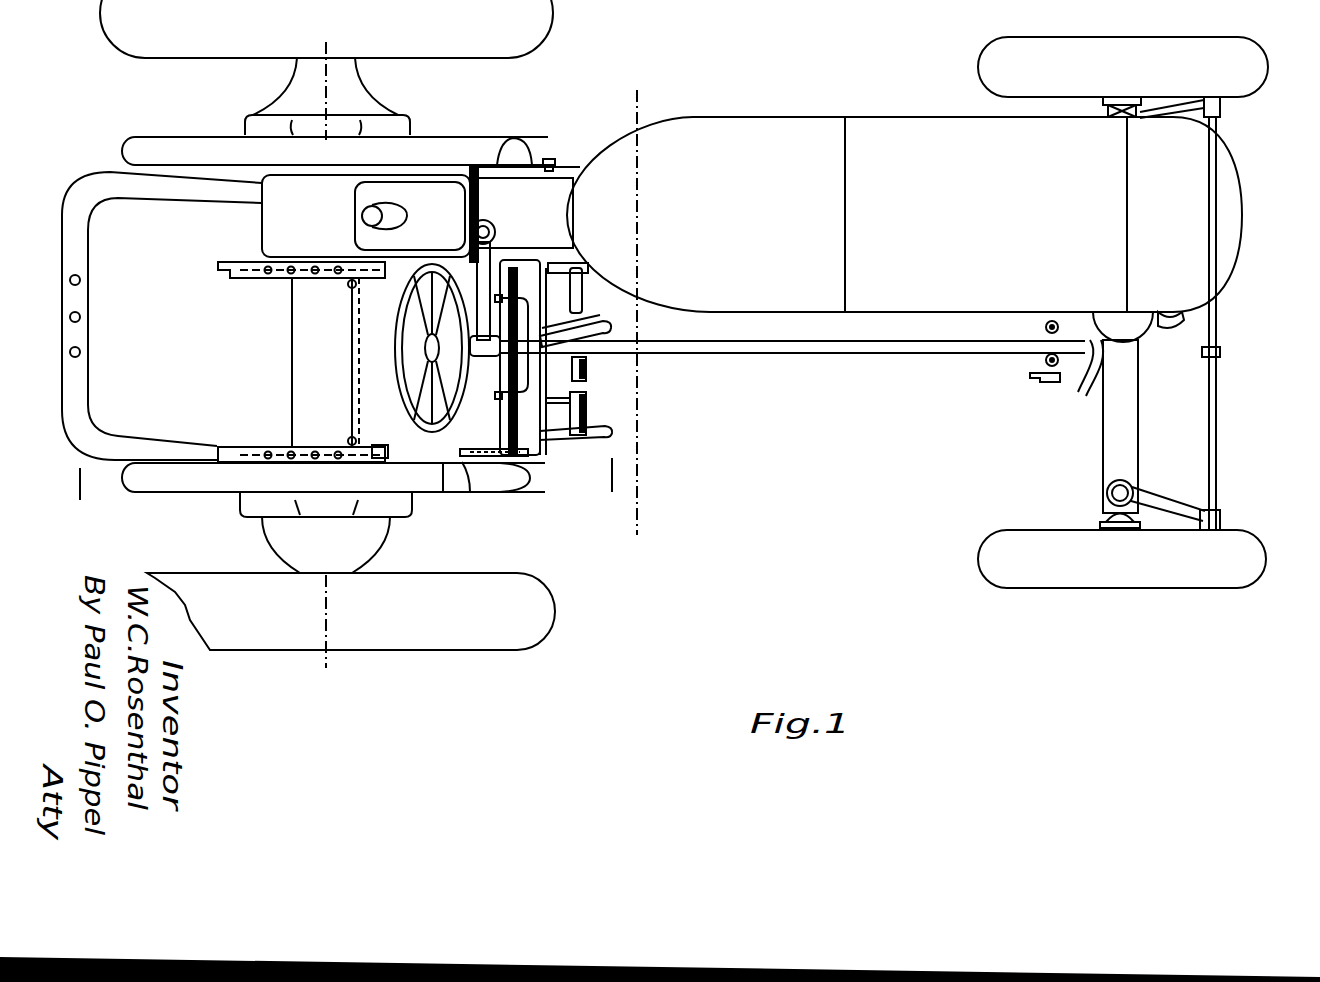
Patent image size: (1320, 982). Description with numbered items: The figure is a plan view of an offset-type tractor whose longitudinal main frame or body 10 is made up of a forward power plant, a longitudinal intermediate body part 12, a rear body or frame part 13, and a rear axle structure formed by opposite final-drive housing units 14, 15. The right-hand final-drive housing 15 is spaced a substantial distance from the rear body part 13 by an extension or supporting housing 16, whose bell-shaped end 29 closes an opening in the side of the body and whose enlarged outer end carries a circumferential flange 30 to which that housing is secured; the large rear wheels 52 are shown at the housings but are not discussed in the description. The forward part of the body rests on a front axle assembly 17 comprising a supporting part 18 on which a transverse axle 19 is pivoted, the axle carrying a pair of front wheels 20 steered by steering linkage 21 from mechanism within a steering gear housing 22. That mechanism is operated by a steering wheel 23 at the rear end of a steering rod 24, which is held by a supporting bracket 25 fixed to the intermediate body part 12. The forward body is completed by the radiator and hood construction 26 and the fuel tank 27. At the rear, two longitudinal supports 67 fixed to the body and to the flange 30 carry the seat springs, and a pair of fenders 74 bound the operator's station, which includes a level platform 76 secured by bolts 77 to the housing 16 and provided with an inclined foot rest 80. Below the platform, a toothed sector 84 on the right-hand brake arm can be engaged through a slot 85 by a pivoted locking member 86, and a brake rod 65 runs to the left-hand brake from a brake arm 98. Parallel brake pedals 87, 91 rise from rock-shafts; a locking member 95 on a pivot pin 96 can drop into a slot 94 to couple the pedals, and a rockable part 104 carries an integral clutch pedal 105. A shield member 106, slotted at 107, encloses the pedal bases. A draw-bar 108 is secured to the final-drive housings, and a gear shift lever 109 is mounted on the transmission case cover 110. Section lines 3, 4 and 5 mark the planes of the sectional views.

The section line 3- 3 is at (322, 42).
The section line 4- 4 is at (112, 465).
The section line 5- 5 is at (612, 97).
The main frame or body 10 is at (765, 110).
The intermediate body part 12 is at (565, 175).
The rear body or frame part 13 is at (270, 200).
The final-drive housing unit 14 is at (362, 108).
The final-drive housing unit 15 is at (343, 550).
The extension or supporting housing 16 is at (305, 338).
The front axle assembly 17 is at (1168, 380).
The supporting part 18 is at (1172, 322).
The transverse axle 19 is at (1118, 437).
The front wheels 20 is at (1243, 83).
The steering linkage 21 is at (1218, 455).
The steering gear housing 22 is at (1080, 392).
The steering wheel 23 is at (415, 402).
The steering rod 24 is at (792, 348).
The supporting bracket 25 is at (487, 232).
The radiator and hood construction 26 is at (1029, 214).
The fuel tank 27 is at (793, 214).
The bell-shaped end 29 is at (297, 278).
The circumferential flange 30 is at (408, 443).
The drive wheel 52 is at (515, 45).
The brake rod 65 is at (497, 160).
The supports 67 is at (225, 275).
The fenders 74 is at (152, 145).
The platform 76 is at (443, 492).
The bolts 77 is at (348, 287).
The foot rest 80 is at (525, 372).
The sector 84 is at (500, 448).
The slot 85 is at (520, 470).
The locking member 86 is at (470, 492).
The brake pedal 87 is at (612, 432).
The brake pedal 91 is at (588, 362).
The slot 94 is at (588, 375).
The locking member 95 is at (588, 405).
The pivot pin 96 is at (568, 392).
The brake arm 98 is at (549, 158).
The rockable part 104 is at (523, 357).
The clutch pedal 105 is at (582, 298).
The shield member 106 is at (562, 282).
The slot 107 is at (530, 172).
The draw-bar 108 is at (90, 292).
The gear shift lever 109 is at (362, 216).
The transmission case cover 110 is at (370, 230).